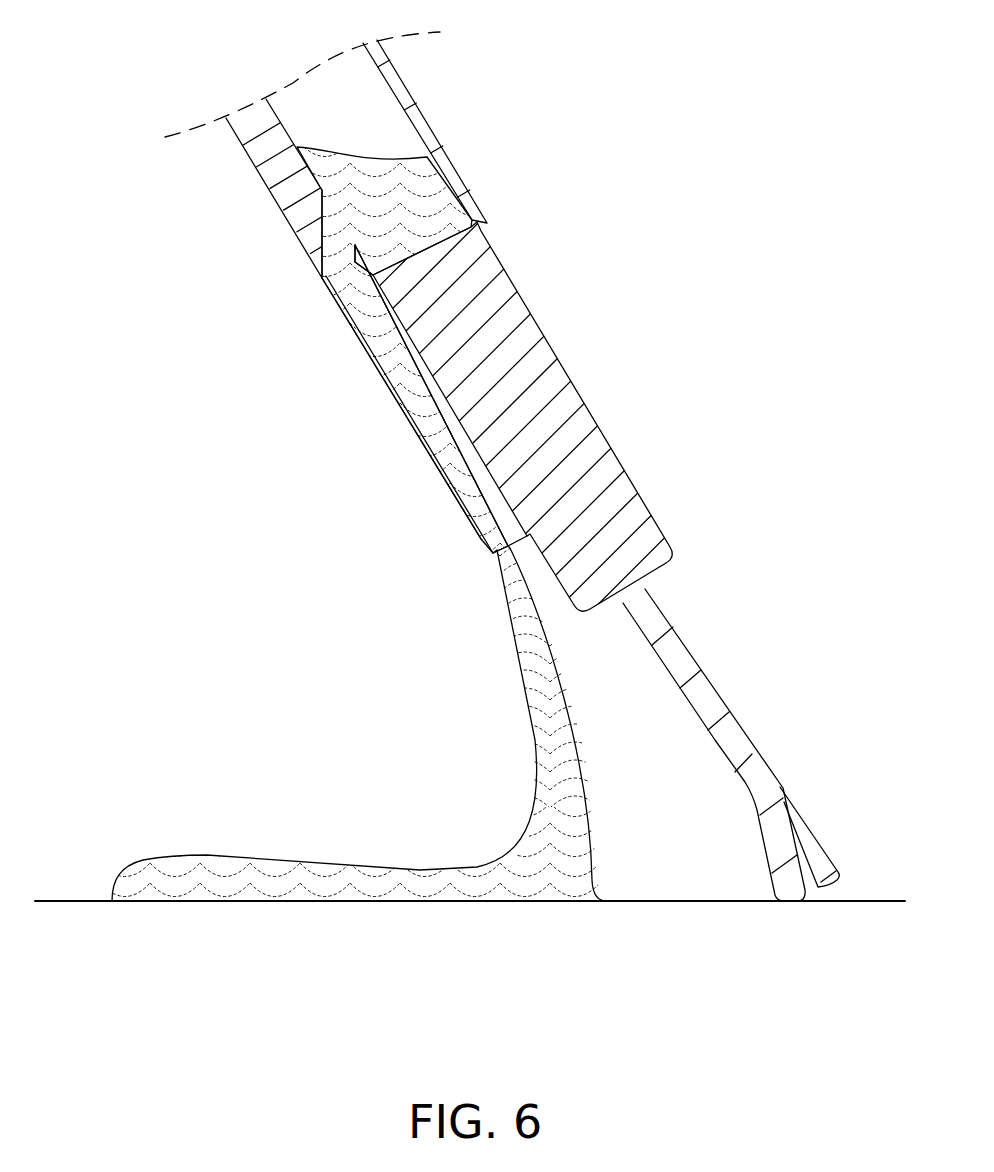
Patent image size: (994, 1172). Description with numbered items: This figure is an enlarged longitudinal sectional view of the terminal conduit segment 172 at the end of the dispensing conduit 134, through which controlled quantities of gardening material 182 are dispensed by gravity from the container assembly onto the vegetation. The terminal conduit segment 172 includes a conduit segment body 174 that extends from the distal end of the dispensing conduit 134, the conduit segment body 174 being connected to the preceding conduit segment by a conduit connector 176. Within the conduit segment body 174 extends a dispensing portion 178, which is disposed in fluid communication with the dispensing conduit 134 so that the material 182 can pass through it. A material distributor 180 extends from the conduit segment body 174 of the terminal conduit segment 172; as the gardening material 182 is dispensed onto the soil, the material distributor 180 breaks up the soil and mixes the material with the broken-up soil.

The dispensing conduit 134 is at (446, 80).
The conduit connector 176 is at (432, 127).
The conduit segment body 174 is at (505, 320).
The terminal conduit segment 172 is at (611, 428).
The dispensing portion 178 is at (430, 457).
The material distributor 180 is at (693, 657).
The material 182 is at (540, 727).